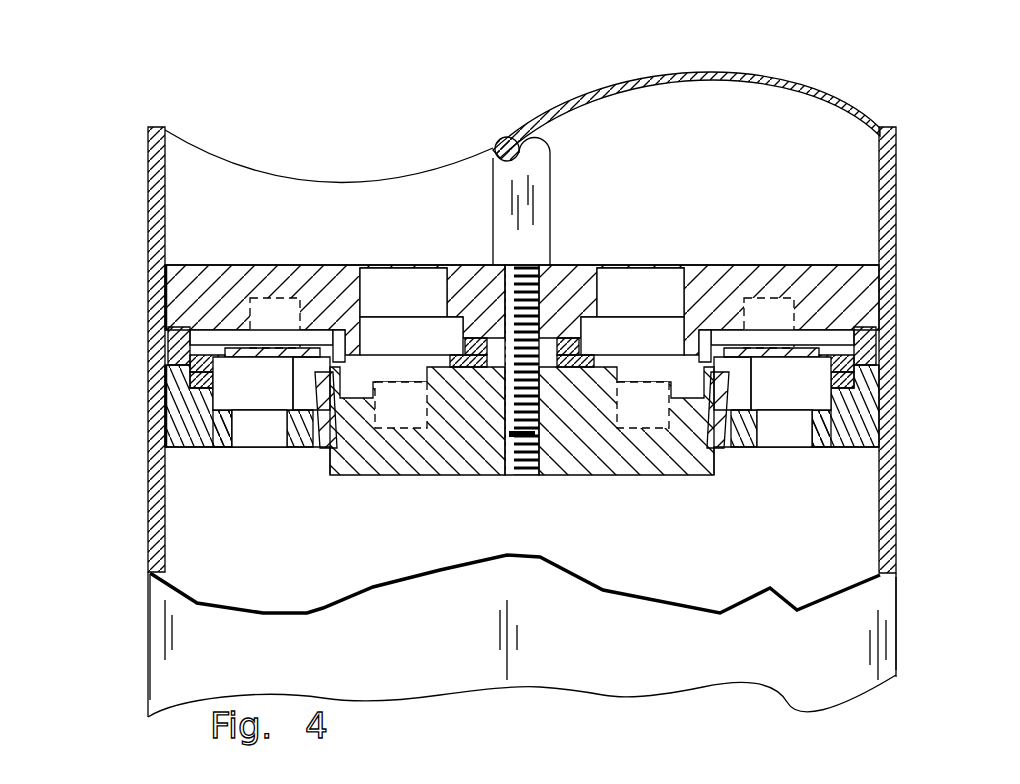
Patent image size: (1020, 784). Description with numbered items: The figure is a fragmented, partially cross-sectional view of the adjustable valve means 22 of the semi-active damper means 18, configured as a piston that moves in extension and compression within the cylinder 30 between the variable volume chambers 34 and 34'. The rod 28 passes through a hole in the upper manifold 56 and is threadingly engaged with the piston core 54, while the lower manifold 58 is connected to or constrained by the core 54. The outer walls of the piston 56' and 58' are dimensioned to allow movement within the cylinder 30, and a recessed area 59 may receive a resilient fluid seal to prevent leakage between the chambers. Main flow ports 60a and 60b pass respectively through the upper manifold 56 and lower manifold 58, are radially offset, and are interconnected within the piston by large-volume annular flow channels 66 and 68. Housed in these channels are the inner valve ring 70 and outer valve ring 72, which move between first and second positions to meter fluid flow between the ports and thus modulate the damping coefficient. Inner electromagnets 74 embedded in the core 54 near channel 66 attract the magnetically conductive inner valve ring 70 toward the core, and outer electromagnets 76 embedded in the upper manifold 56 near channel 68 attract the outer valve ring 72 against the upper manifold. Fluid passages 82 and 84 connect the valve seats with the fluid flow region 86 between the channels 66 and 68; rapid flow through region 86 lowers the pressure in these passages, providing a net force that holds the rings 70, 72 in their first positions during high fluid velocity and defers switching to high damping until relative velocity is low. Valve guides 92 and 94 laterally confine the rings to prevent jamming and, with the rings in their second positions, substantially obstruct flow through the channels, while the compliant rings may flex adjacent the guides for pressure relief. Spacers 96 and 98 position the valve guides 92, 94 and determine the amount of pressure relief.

The semi-active damper means 18 is at (606, 62).
The adjustable valve means 22 is at (196, 262).
The rod 28 is at (551, 158).
The cylinder 30 is at (148, 196).
The variable volume chamber 34 is at (523, 414).
The variable volume chamber 34' is at (518, 616).
The piston core 54 is at (450, 473).
The upper manifold 56 is at (522, 287).
The outer wall of the piston 56' is at (125, 296).
The lower manifold 58 is at (522, 437).
The outer wall of the piston 58' is at (129, 406).
The recessed area 59 is at (170, 313).
The main flow port 60a is at (410, 292).
The main flow port 60b is at (279, 442).
The annular flow channel 66 is at (398, 347).
The annular flow channel 68 is at (258, 392).
The inner valve ring 70 is at (430, 350).
The outer valve ring 72 is at (285, 447).
The inner electromagnet 74 is at (395, 412).
The outer electromagnet 76 is at (270, 300).
The fluid passage 82 is at (375, 425).
The fluid passage 84 is at (318, 330).
The fluid flow region 86 is at (340, 340).
The valve guide 92 is at (473, 370).
The valve guide 94 is at (190, 362).
The spacer 96 is at (476, 338).
The spacer 98 is at (200, 447).